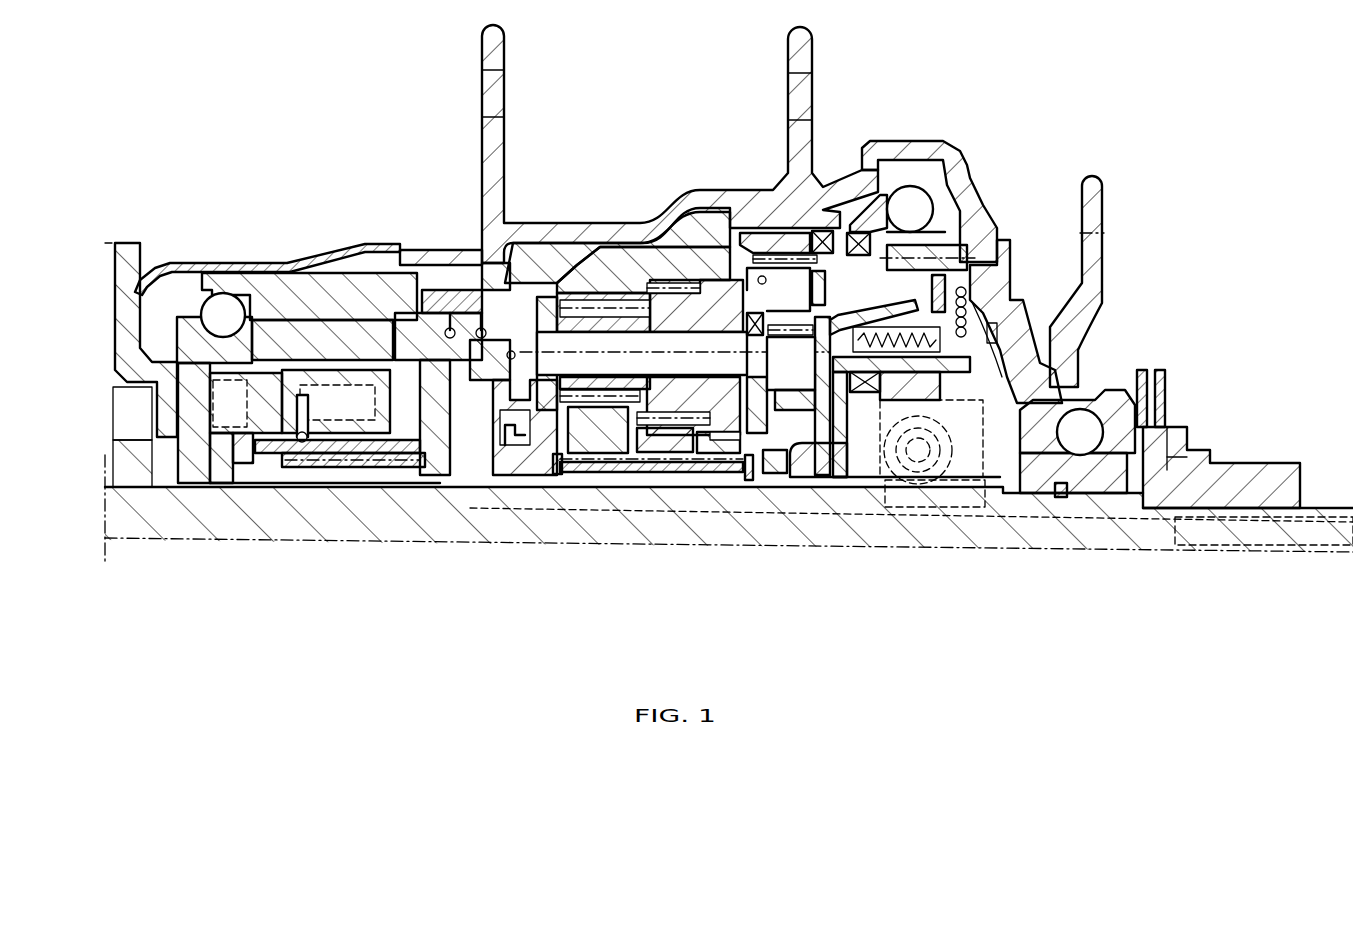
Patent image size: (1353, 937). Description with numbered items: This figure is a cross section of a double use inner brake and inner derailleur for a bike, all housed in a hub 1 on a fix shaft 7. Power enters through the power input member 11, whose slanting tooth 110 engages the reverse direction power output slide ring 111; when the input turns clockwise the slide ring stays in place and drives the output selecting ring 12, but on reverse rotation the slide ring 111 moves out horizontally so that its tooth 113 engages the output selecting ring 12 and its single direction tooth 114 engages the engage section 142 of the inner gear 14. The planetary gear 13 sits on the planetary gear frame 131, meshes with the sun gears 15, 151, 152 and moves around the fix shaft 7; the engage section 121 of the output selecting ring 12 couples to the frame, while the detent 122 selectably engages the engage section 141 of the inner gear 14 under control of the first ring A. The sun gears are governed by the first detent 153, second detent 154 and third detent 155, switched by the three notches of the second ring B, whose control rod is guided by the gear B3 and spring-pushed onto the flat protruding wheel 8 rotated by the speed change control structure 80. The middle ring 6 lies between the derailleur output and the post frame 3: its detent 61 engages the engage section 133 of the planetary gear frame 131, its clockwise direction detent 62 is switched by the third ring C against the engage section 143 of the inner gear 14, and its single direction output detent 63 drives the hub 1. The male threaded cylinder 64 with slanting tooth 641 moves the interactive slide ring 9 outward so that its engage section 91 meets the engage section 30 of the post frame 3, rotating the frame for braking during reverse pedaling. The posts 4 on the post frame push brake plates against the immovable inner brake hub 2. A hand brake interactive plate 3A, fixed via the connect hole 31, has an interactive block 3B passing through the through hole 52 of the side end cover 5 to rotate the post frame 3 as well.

The hub 1 is at (680, 144).
The inner brake hub 2 is at (309, 263).
The post frame 3 is at (145, 404).
The interactive plate 3A is at (197, 349).
The interactive block 3B is at (101, 352).
The connect hole 31 is at (97, 280).
The post 4 is at (304, 293).
The side end cover 5 is at (207, 289).
The through hole 52 is at (106, 323).
The middle ring 6 is at (417, 387).
The detent 61 is at (457, 235).
The clockwise direction detent 62 is at (414, 259).
The single direction output detent 63 is at (408, 257).
The male threaded cylinder 64 is at (337, 507).
The slanting tooth 641 is at (353, 523).
The fix shaft 7 is at (1216, 505).
The flat protruding wheel 8 is at (885, 434).
The speed change control structure 80 is at (1188, 398).
The interactive slide ring 9 is at (300, 473).
The engage section 91 is at (253, 522).
The engage section 30 is at (305, 522).
The power input member 11 is at (1022, 302).
The output selecting ring 12 is at (855, 279).
The planetary gear 13 is at (650, 219).
The inner gear 14 is at (617, 223).
The sun gear 15 is at (675, 448).
The slanting tooth 110 is at (1007, 319).
The reverse direction power output slide ring 111 is at (1045, 281).
The tooth 113 is at (969, 180).
The single direction tooth 114 is at (934, 173).
The engage section 121 is at (748, 245).
The detent 122 is at (748, 185).
The planetary gear frame 131 is at (543, 298).
The engage section 133 is at (482, 461).
The engage section 141 is at (750, 194).
The engage section 142 is at (854, 162).
The engage section 143 is at (455, 214).
The sun gear 151 is at (688, 521).
The sun gear 152 is at (599, 510).
The first detent 153 is at (695, 537).
The second detent 154 is at (713, 509).
The third detent 155 is at (650, 481).
The first ring A is at (852, 541).
The second ring B is at (582, 552).
The gear B3 is at (1053, 551).
The third ring C is at (525, 484).